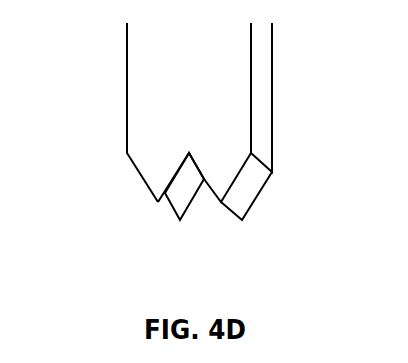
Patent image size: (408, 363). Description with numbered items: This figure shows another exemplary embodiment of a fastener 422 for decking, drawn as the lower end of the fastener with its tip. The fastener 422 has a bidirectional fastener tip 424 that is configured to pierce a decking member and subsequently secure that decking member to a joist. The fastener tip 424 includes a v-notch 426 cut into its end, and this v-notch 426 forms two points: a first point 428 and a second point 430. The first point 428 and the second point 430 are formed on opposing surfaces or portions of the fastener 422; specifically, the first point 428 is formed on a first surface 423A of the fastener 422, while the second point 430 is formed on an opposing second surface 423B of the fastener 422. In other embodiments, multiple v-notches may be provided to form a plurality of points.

The fastener 422 is at (127, 72).
The first surface 423A is at (212, 83).
The second surface 423B is at (272, 100).
The bidirectional fastener tip 424 is at (106, 193).
The v-notch 426 is at (190, 155).
The first point 428 is at (158, 203).
The second point 430 is at (242, 220).